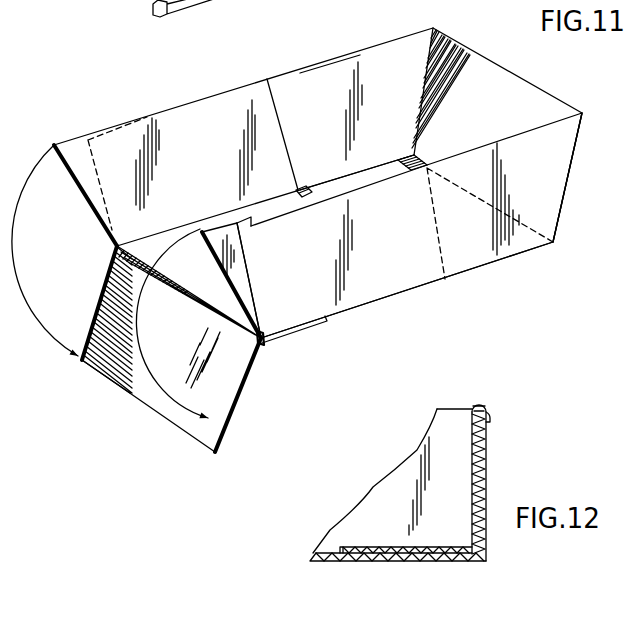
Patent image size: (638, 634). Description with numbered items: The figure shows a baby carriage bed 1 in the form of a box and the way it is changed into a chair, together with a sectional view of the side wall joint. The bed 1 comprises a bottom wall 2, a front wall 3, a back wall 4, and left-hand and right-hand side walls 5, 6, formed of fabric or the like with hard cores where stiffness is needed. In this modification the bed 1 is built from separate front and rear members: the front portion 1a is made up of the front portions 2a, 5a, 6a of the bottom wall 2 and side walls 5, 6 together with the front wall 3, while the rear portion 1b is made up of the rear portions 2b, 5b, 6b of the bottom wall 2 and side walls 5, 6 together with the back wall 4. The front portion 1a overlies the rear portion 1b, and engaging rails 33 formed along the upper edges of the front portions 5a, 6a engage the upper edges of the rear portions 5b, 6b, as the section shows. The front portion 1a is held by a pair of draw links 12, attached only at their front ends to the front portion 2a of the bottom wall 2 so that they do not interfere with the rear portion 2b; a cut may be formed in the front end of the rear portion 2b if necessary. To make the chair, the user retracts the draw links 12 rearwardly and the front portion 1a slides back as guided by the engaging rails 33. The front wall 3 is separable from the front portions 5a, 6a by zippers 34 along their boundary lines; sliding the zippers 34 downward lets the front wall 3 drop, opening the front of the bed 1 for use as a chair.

In FIG. 11, the baby carriage bed 1 is at (466, 31).
In FIG. 11, the front portion 1a is at (72, 137).
In FIG. 11, the rear portion 1b is at (333, 55).
In FIG. 11, the bottom wall 2 is at (334, 180).
In FIG. 11, the front portion of bottom wall 2a is at (103, 286).
In FIG. 12, the front portion of bottom wall 2a is at (372, 547).
In FIG. 11, the rear portion of bottom wall 2b is at (378, 166).
In FIG. 12, the rear portion of bottom wall 2b is at (402, 558).
In FIG. 11, the front wall 3 is at (113, 363).
In FIG. 11, the back wall 4 is at (500, 80).
In FIG. 11, the left-hand side wall 5 is at (230, 103).
In FIG. 11, the front portion of left-hand side wall 5a is at (147, 117).
In FIG. 11, the rear portion of left-hand side wall 5b is at (308, 83).
In FIG. 11, the right-hand side wall 6 is at (414, 269).
In FIG. 11, the front portion of right-hand side wall 6a is at (240, 268).
In FIG. 12, the front portion of right-hand side wall 6a is at (472, 420).
In FIG. 11, the rear portion of right-hand side wall 6b is at (505, 256).
In FIG. 12, the rear portion of right-hand side wall 6b is at (486, 474).
In FIG. 11, the draw links 12 is at (300, 328).
In FIG. 11, the engaging rails 33 is at (370, 184).
In FIG. 12, the engaging rails 33 is at (480, 403).
In FIG. 11, the zippers 34 is at (92, 210).